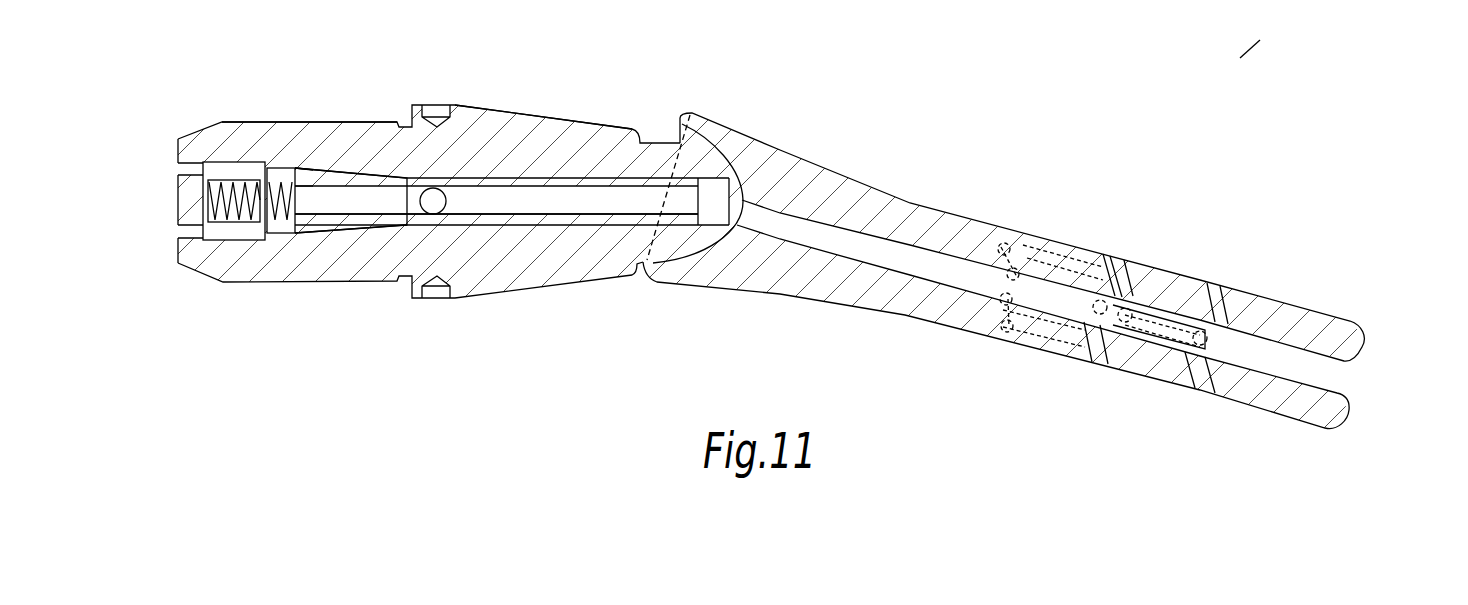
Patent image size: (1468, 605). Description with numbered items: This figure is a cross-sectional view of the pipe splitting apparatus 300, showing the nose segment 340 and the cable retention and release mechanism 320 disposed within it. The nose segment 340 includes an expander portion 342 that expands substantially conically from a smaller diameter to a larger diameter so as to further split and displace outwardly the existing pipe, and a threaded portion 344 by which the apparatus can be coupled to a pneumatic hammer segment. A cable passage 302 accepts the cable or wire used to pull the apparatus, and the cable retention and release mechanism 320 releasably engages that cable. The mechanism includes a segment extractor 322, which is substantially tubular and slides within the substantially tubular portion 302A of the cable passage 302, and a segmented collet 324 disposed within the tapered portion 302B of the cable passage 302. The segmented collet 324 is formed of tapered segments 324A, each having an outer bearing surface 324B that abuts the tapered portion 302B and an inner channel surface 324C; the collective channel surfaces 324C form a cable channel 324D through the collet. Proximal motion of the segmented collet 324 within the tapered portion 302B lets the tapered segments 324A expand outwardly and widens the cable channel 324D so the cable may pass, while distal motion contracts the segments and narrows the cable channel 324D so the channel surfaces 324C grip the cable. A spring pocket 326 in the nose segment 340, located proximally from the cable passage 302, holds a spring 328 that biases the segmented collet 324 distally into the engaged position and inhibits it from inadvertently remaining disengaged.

The pipe splitting apparatus 300 is at (1260, 38).
The cable passage 302 is at (1345, 377).
The substantially tubular portion of the cable passage 302A is at (490, 218).
The tapered portion of the cable passage 302B is at (391, 226).
The cable retention and release mechanism 320 is at (364, 262).
The segment extractor 322 is at (573, 222).
The segmented collet 324 is at (324, 172).
The tapered segments 324A is at (349, 173).
The outer bearing surface 324B is at (311, 172).
The inner channel surface 324C is at (370, 213).
The cable channel 324D is at (313, 203).
The spring pocket 326 is at (224, 223).
The spring 328 is at (217, 200).
The nose segment 340 is at (487, 105).
The expander portion 342 is at (555, 127).
The threaded portion 344 is at (376, 123).